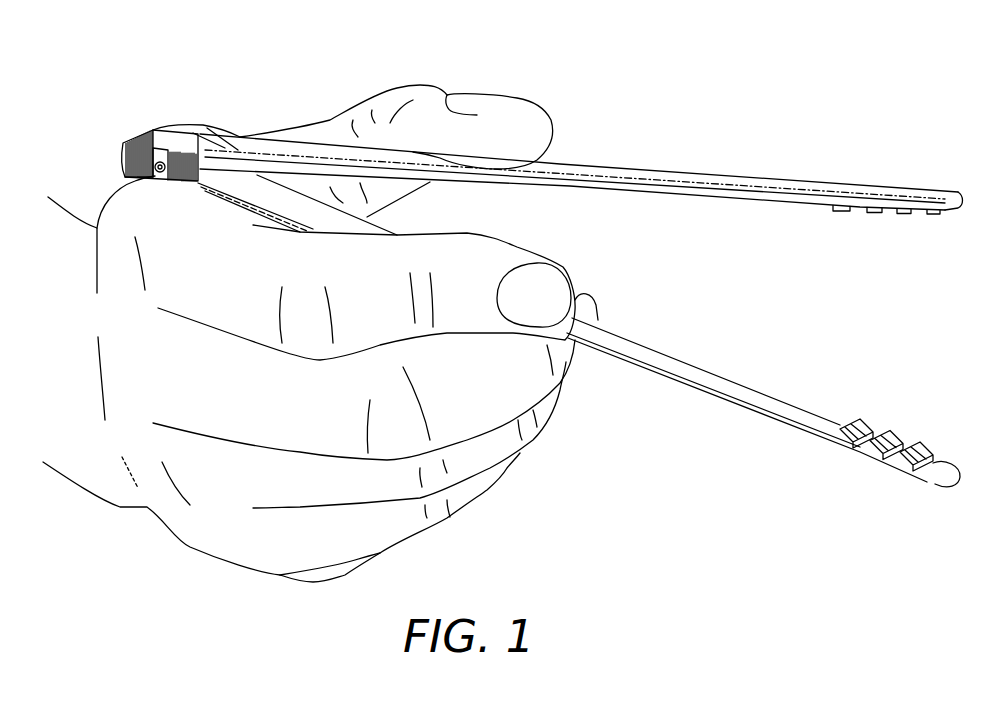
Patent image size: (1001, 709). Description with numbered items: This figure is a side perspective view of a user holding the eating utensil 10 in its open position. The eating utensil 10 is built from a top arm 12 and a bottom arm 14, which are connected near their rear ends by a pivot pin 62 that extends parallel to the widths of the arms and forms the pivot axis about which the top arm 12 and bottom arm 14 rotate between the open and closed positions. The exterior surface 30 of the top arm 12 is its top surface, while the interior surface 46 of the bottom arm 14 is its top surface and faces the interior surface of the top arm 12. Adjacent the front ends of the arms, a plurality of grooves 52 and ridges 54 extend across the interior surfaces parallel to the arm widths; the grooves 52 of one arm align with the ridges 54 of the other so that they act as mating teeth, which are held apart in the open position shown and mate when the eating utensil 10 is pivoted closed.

The eating utensil 10 is at (858, 77).
The top arm 12 is at (581, 151).
The bottom arm 14 is at (579, 337).
The exterior surface 30 is at (622, 177).
The interior surface 46 is at (687, 370).
The grooves 52 is at (933, 458).
The ridges 54 is at (918, 212).
The pivot pin 62 is at (162, 160).